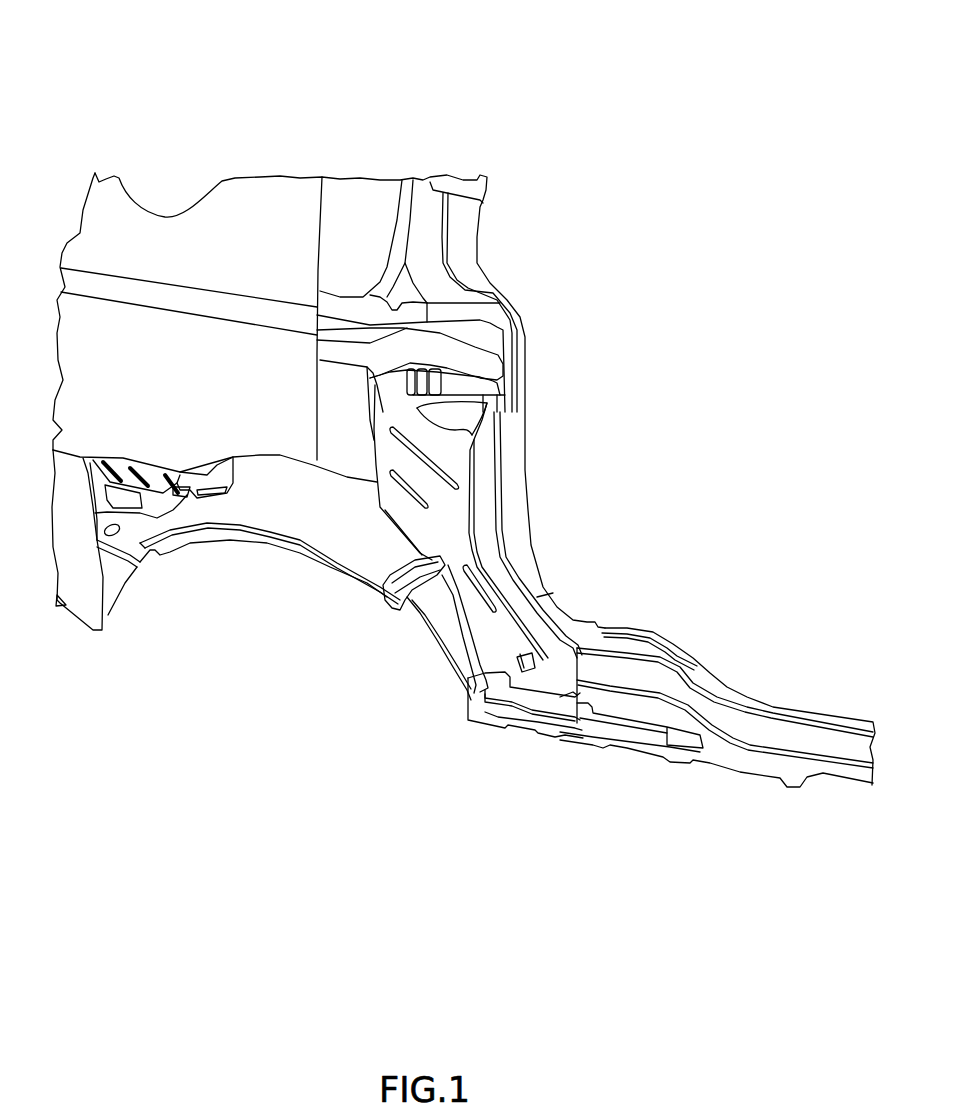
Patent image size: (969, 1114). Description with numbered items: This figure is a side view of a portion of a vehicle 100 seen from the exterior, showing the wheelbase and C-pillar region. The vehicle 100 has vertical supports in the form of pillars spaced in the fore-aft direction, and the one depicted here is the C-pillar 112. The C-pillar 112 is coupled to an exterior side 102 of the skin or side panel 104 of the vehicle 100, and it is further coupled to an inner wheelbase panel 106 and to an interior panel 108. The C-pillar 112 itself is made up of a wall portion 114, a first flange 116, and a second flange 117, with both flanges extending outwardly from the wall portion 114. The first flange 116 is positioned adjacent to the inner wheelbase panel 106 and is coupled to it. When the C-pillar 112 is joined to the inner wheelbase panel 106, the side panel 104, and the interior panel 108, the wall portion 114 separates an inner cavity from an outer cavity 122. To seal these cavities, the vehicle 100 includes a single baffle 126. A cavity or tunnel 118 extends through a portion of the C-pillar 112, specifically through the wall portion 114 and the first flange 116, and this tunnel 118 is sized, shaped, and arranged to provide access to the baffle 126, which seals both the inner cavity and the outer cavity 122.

The vehicle 100 is at (392, 50).
The exterior side 102 is at (230, 335).
The side panel 104 is at (203, 360).
The inner wheelbase panel 106 is at (237, 507).
The interior panel 108 is at (345, 385).
The C-pillar 112 is at (433, 450).
The wall portion 114 is at (430, 487).
The first flange 116 is at (413, 543).
The second flange 117 is at (527, 573).
The tunnel 118 is at (357, 577).
The outer cavity 122 is at (413, 597).
The baffle 126 is at (393, 583).